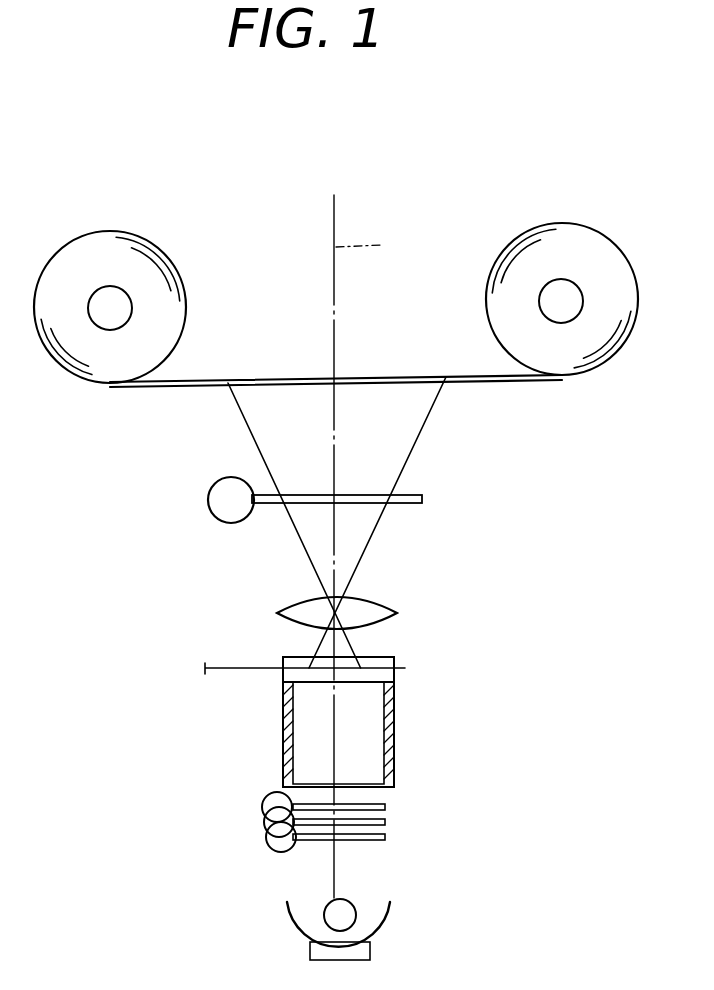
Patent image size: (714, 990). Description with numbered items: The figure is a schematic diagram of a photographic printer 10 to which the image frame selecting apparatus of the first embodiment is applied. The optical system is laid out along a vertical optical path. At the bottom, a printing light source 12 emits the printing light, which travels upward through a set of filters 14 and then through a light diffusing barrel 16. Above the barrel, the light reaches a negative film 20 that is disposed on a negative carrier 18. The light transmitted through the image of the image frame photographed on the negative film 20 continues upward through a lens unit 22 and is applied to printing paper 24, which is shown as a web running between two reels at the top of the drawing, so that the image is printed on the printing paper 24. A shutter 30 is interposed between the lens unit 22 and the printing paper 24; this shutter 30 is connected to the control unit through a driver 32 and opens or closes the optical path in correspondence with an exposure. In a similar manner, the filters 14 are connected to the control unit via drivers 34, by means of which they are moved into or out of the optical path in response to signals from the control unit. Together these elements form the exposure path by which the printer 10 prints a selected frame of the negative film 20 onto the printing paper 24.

The photographic printer 10 is at (543, 527).
The printing light source 12 is at (391, 908).
The filters 14 is at (385, 837).
The light diffusing barrel 16 is at (394, 736).
The negative carrier 18 is at (398, 664).
The negative film 20 is at (238, 659).
The lens unit 22 is at (388, 614).
The printing paper 24 is at (494, 382).
The shutter 30 is at (420, 505).
The driver 32 is at (216, 521).
The drivers 34 is at (264, 840).